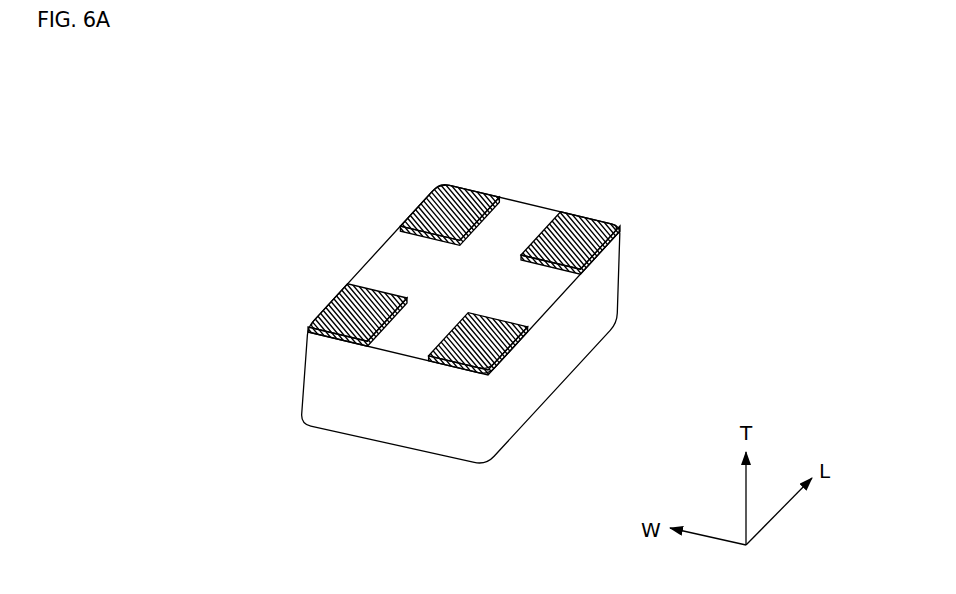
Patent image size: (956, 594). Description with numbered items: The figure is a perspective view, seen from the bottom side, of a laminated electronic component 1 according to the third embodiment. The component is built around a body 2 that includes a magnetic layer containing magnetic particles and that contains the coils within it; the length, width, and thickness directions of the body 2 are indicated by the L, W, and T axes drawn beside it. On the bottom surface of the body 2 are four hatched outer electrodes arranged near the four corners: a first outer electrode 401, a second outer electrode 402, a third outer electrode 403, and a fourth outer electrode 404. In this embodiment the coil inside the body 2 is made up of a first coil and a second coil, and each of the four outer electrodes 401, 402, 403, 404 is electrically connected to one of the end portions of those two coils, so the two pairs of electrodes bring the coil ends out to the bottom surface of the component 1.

The laminated electronic component 1 is at (674, 139).
The body 2 is at (548, 368).
The first outer electrode 401 is at (347, 313).
The second outer electrode 402 is at (452, 203).
The third outer electrode 403 is at (476, 343).
The fourth outer electrode 404 is at (577, 233).